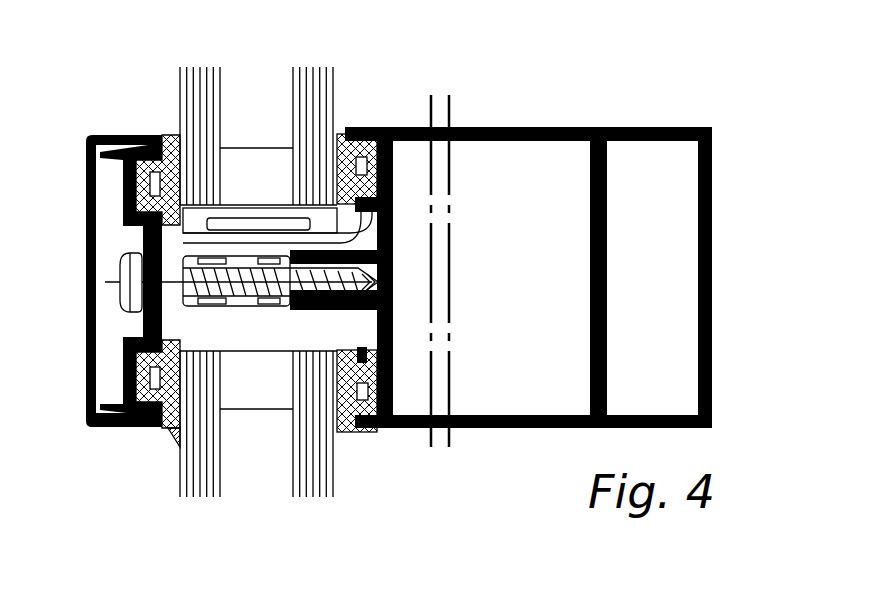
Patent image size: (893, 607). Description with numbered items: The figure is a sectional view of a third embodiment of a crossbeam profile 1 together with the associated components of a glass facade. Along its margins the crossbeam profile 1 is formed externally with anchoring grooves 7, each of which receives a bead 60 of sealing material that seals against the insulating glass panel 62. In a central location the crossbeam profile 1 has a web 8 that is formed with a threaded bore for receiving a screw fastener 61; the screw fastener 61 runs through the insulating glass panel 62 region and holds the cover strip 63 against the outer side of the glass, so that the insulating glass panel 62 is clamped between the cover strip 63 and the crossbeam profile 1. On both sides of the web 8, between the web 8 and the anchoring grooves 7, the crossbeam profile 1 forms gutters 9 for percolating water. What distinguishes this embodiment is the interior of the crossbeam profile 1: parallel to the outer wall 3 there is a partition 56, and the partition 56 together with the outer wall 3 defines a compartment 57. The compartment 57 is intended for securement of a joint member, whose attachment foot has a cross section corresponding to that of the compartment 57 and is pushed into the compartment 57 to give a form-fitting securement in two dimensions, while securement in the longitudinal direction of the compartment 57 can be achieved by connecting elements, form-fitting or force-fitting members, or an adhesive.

The crossbeam profile 1 is at (537, 126).
The outer wall 3 is at (713, 292).
The anchoring groove 7 is at (377, 430).
The web 8 is at (307, 313).
The gutter 9 is at (397, 340).
The partition 56 is at (607, 162).
The compartment 57 is at (712, 180).
The bead of sealing material 60 is at (343, 127).
The screw fastener 61 is at (124, 281).
The insulating glass panel 62 is at (174, 463).
The cover strip 63 is at (79, 399).